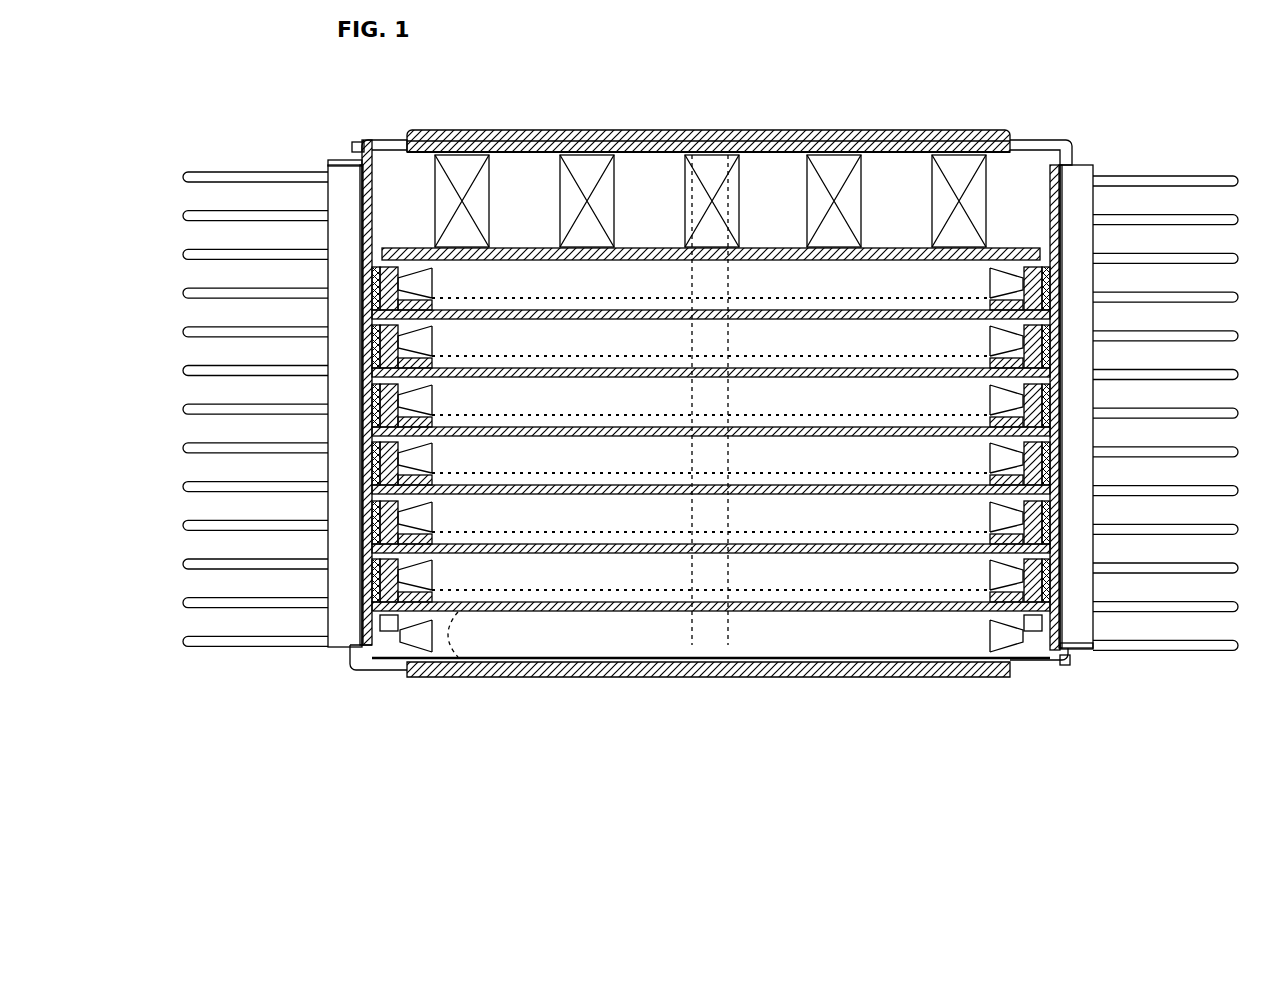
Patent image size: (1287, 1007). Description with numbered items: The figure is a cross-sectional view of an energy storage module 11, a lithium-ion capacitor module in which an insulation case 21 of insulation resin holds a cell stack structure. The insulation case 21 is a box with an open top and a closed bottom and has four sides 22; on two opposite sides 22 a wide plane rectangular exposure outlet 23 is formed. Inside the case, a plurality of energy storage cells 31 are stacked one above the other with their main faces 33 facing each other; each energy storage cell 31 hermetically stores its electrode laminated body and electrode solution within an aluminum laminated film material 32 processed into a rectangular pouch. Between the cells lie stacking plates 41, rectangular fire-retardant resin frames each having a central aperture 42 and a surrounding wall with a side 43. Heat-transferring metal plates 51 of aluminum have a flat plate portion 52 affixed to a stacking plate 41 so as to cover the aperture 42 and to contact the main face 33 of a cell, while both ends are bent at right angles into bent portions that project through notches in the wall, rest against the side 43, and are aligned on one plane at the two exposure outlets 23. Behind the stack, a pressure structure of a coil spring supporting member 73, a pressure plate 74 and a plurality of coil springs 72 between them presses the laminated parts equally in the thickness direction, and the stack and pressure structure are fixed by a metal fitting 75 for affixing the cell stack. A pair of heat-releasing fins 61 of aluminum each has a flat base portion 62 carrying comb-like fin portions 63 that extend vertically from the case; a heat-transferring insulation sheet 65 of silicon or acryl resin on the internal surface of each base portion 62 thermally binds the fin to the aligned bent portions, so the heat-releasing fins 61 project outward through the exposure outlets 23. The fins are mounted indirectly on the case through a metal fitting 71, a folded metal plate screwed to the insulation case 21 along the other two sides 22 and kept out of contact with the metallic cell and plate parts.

The energy storage module 11 is at (1124, 128).
The insulation case 21 is at (1030, 140).
The side 22 is at (352, 147).
The exposure outlet 23 is at (340, 168).
The energy storage cell 31 is at (710, 490).
The aluminum laminated film material 32 is at (555, 660).
The main face 33 is at (614, 540).
The stacking plate 41 is at (1090, 288).
The aperture 42 is at (470, 676).
The side 43 is at (378, 352).
The heat-transferring metal plate 51 is at (711, 492).
The flat plate portion 52 is at (784, 486).
The heat-releasing fin 61 is at (712, 414).
The base portion 62 is at (340, 620).
The fin portion 63 is at (242, 562).
The heat-transferring insulation sheet 65 is at (365, 482).
The metal fitting 71 is at (775, 130).
The coil spring 72 is at (435, 200).
The coil spring supporting member 73 is at (540, 155).
The pressure plate 74 is at (782, 250).
The metal fitting for affixing the cell stack 75 is at (757, 648).